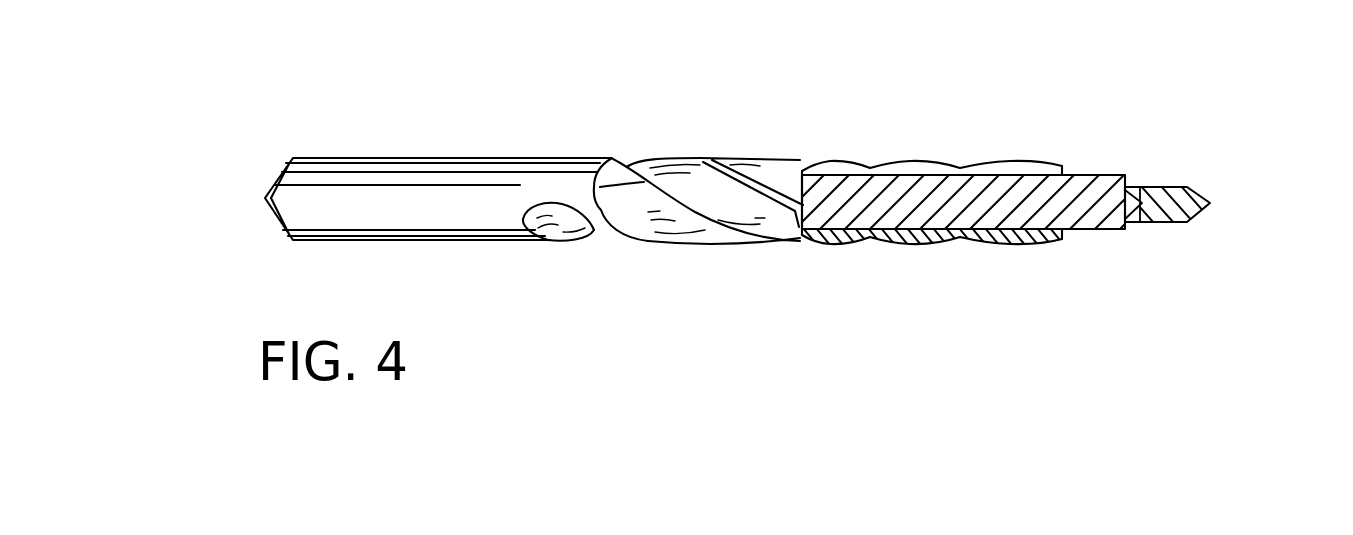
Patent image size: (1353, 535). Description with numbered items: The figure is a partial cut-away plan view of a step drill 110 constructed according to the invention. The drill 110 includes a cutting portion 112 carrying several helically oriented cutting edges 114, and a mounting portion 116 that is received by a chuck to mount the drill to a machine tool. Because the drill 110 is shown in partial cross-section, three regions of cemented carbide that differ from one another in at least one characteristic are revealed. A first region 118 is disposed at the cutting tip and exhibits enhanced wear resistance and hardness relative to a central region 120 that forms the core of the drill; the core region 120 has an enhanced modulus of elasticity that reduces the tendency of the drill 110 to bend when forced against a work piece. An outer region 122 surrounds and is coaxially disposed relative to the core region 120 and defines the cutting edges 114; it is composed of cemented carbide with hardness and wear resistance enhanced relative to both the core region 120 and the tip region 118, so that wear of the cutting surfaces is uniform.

The step drill 110 is at (1022, 113).
The cutting portion 112 is at (912, 245).
The helically oriented cutting edges 114 is at (755, 170).
The mounting portion 116 is at (373, 220).
The first region 118 is at (1172, 220).
The central region 120 is at (1032, 210).
The outer region 122 is at (913, 167).